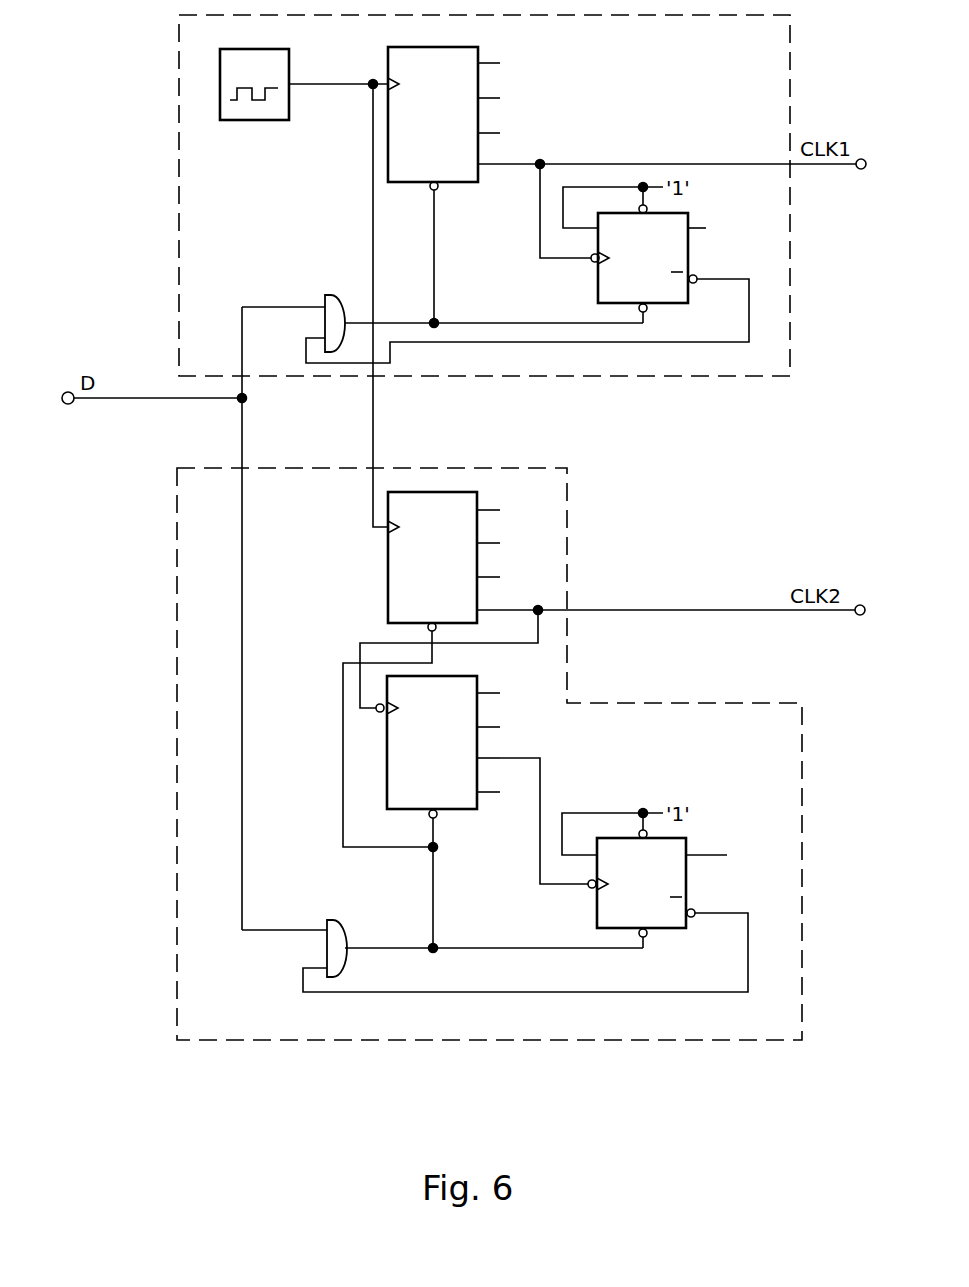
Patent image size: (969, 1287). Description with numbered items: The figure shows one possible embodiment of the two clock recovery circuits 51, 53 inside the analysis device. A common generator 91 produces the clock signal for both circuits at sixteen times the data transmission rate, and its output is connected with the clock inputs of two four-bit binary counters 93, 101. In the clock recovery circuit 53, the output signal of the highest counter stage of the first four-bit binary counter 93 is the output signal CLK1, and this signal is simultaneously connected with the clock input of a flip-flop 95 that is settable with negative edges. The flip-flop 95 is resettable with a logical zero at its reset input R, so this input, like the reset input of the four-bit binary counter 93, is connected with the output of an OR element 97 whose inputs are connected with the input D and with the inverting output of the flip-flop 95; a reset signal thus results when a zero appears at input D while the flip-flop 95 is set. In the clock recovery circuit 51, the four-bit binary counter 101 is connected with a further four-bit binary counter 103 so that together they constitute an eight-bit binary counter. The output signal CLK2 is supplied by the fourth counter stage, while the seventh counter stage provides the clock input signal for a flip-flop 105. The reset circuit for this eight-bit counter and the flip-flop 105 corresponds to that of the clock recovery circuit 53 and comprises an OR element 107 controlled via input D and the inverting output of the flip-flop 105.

The clock recovery circuit 51 is at (672, 750).
The clock recovery circuit 53 is at (692, 70).
The generator 91 is at (289, 60).
The 4-bit binary counter 93 is at (490, 18).
The flip-flop 95 is at (688, 252).
The OR element 97 is at (327, 298).
The 4-bit binary counter 101 is at (388, 576).
The 4-bit binary counter 103 is at (441, 814).
The flip-flop 105 is at (686, 842).
The OR element 107 is at (329, 922).